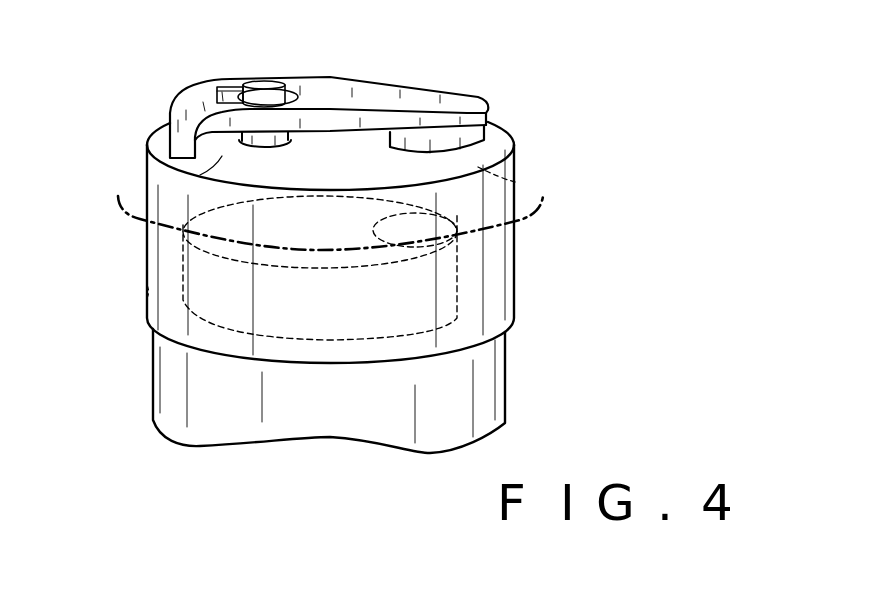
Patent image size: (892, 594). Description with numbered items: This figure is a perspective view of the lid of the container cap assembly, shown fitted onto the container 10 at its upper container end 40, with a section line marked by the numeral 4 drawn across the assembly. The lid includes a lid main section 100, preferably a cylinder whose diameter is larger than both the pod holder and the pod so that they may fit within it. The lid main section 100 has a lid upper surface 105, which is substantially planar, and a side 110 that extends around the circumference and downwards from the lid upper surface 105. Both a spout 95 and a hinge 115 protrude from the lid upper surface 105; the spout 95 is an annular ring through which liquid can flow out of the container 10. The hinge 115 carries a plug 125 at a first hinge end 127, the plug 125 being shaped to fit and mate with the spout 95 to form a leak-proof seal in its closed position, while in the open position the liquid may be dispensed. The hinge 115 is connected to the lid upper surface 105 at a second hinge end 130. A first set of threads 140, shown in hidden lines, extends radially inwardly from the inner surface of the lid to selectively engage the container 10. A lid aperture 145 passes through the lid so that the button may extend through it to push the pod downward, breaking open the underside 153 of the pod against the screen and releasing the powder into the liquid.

The container 10 is at (509, 387).
The upper container end 40 is at (153, 378).
The spout 95 is at (515, 182).
The lid main section 100 is at (517, 278).
The lid upper surface 105 is at (160, 172).
The side 110 is at (514, 303).
The hinge 115 is at (329, 94).
The plug 125 is at (484, 140).
The first hinge end 127 is at (407, 100).
The second hinge end 130 is at (192, 105).
The first set of threads 140 is at (147, 290).
The lid aperture 145 is at (264, 141).
The underside 153 is at (443, 330).
The section line 4- 4 is at (543, 243).